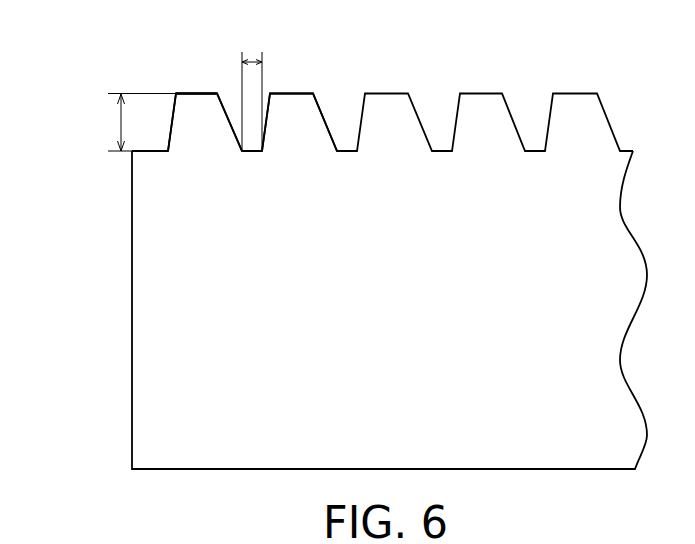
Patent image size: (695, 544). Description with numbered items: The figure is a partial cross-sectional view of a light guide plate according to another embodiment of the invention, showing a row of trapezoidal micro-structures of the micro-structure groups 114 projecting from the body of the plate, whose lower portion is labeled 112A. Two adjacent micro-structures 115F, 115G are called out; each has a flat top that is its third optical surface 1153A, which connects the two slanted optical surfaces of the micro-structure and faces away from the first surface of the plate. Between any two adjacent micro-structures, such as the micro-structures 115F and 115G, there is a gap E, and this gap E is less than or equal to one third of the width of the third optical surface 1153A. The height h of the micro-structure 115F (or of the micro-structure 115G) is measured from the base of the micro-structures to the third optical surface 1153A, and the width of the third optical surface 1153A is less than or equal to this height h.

The substrate body 112A is at (389, 344).
The micro-structure groups 114 is at (343, 103).
The micro-structure 115F is at (192, 117).
The third optical surface 1153A is at (203, 93).
The micro-structure 115G is at (297, 115).
The height h is at (134, 123).
The gap E is at (250, 60).